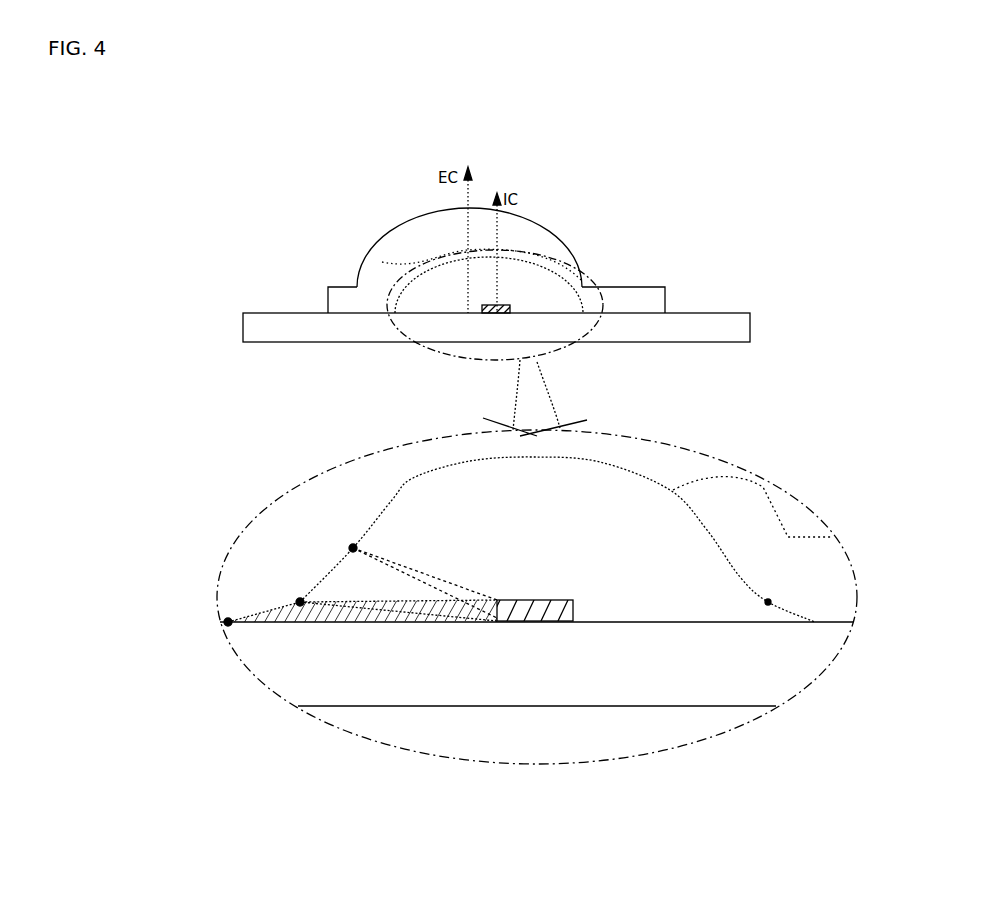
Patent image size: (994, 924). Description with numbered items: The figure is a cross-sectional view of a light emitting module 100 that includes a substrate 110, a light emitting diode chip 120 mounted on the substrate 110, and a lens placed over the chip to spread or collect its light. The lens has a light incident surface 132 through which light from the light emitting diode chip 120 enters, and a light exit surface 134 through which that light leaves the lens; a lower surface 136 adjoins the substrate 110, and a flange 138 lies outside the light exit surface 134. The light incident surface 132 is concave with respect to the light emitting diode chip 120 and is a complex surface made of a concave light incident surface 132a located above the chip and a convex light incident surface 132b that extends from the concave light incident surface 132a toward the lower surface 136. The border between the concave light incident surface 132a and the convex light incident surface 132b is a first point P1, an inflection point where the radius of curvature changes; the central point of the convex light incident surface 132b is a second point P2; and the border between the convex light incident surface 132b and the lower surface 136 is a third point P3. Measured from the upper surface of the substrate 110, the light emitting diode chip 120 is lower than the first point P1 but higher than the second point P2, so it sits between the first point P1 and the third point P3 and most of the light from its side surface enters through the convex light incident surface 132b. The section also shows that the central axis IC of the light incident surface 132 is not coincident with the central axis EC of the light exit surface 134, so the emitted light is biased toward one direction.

The light emitting module 100 is at (402, 145).
The substrate 110 is at (750, 322).
The light emitting diode chip 120 is at (482, 310).
The light incident surface 132 is at (382, 262).
The concave light incident surface 132a is at (413, 480).
The convex light incident surface 132b is at (325, 578).
The light exit surface 134 is at (408, 220).
The lower surface 136 is at (337, 313).
The flange 138 is at (650, 288).
The first point P1 is at (350, 547).
The second point P2 is at (298, 600).
The third point P3 is at (226, 621).